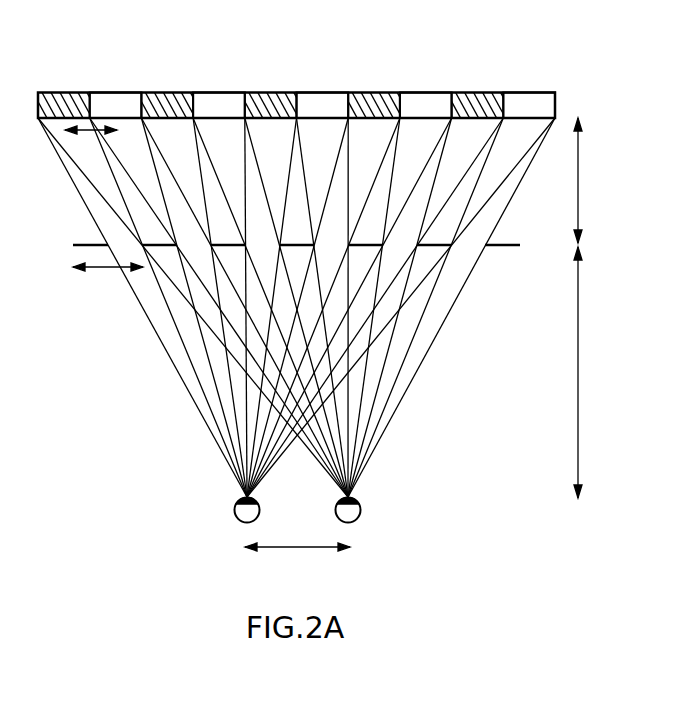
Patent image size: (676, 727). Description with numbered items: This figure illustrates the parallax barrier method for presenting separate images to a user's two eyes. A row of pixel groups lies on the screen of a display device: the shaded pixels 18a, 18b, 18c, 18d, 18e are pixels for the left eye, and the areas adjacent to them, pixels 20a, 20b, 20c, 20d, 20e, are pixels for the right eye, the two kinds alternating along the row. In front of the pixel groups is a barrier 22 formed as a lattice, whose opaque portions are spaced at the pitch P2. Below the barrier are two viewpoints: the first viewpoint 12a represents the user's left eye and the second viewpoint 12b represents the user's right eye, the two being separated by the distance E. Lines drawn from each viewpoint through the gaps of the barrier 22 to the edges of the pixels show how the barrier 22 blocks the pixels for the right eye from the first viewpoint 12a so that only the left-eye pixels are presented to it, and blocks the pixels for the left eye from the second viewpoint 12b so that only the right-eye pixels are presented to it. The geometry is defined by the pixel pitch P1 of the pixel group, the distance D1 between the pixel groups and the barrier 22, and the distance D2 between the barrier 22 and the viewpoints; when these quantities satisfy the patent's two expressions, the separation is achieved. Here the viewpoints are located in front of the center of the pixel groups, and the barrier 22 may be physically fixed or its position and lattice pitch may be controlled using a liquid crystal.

The pixel for the left eye 18a is at (62, 92).
The pixel for the left eye 18b is at (165, 92).
The pixel for the left eye 18c is at (268, 92).
The pixel for the left eye 18d is at (372, 92).
The pixel for the left eye 18e is at (474, 92).
The pixel for the right eye 20a is at (115, 100).
The pixel for the right eye 20b is at (218, 100).
The pixel for the right eye 20c is at (320, 100).
The pixel for the right eye 20d is at (425, 100).
The pixel for the right eye 20e is at (527, 100).
The barrier 22 is at (503, 246).
The first viewpoint 12a is at (236, 506).
The second viewpoint 12b is at (359, 506).
The pixel pitch P1 is at (88, 133).
The pitch of lattice of the barrier P2 is at (107, 270).
The distance between the pixel groups and the barrier D1 is at (598, 180).
The distance between the barrier and the viewpoints D2 is at (598, 372).
The distance between the first viewpoint and the second viewpoint E is at (297, 562).